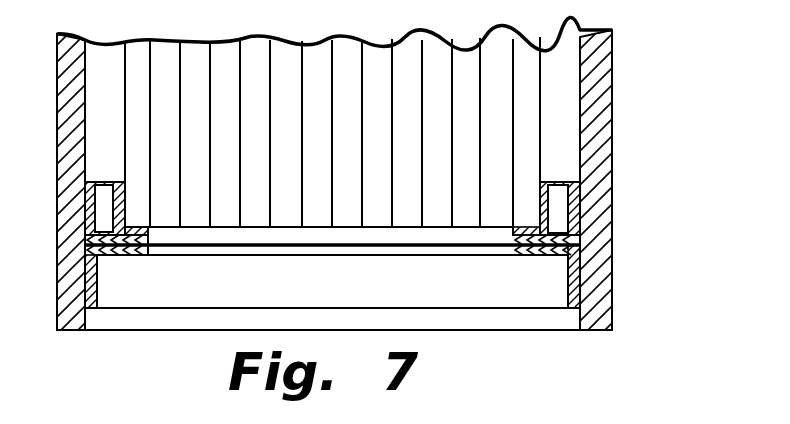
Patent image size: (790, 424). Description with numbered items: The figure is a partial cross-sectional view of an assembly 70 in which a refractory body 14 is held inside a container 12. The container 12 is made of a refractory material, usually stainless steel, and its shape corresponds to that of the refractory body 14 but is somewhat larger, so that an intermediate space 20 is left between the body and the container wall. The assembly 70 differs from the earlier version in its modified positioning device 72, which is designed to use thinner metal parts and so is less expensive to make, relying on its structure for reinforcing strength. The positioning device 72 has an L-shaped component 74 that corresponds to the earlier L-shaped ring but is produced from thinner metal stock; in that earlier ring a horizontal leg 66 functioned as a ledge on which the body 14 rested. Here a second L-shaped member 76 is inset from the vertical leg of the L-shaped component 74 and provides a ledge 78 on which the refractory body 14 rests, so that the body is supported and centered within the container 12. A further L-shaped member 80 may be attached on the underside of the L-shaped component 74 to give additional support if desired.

The container 12 is at (600, 163).
The refractory body 14 is at (258, 68).
The intermediate space 20 is at (400, 127).
The horizontal leg 66 is at (334, 25).
The assembly 70 is at (630, 51).
The positioning device 72 is at (570, 238).
The L-shaped component 74 is at (589, 180).
The second L-shaped member 76 is at (565, 197).
The ledge 78 is at (530, 252).
The further L-shaped member 80 is at (528, 252).